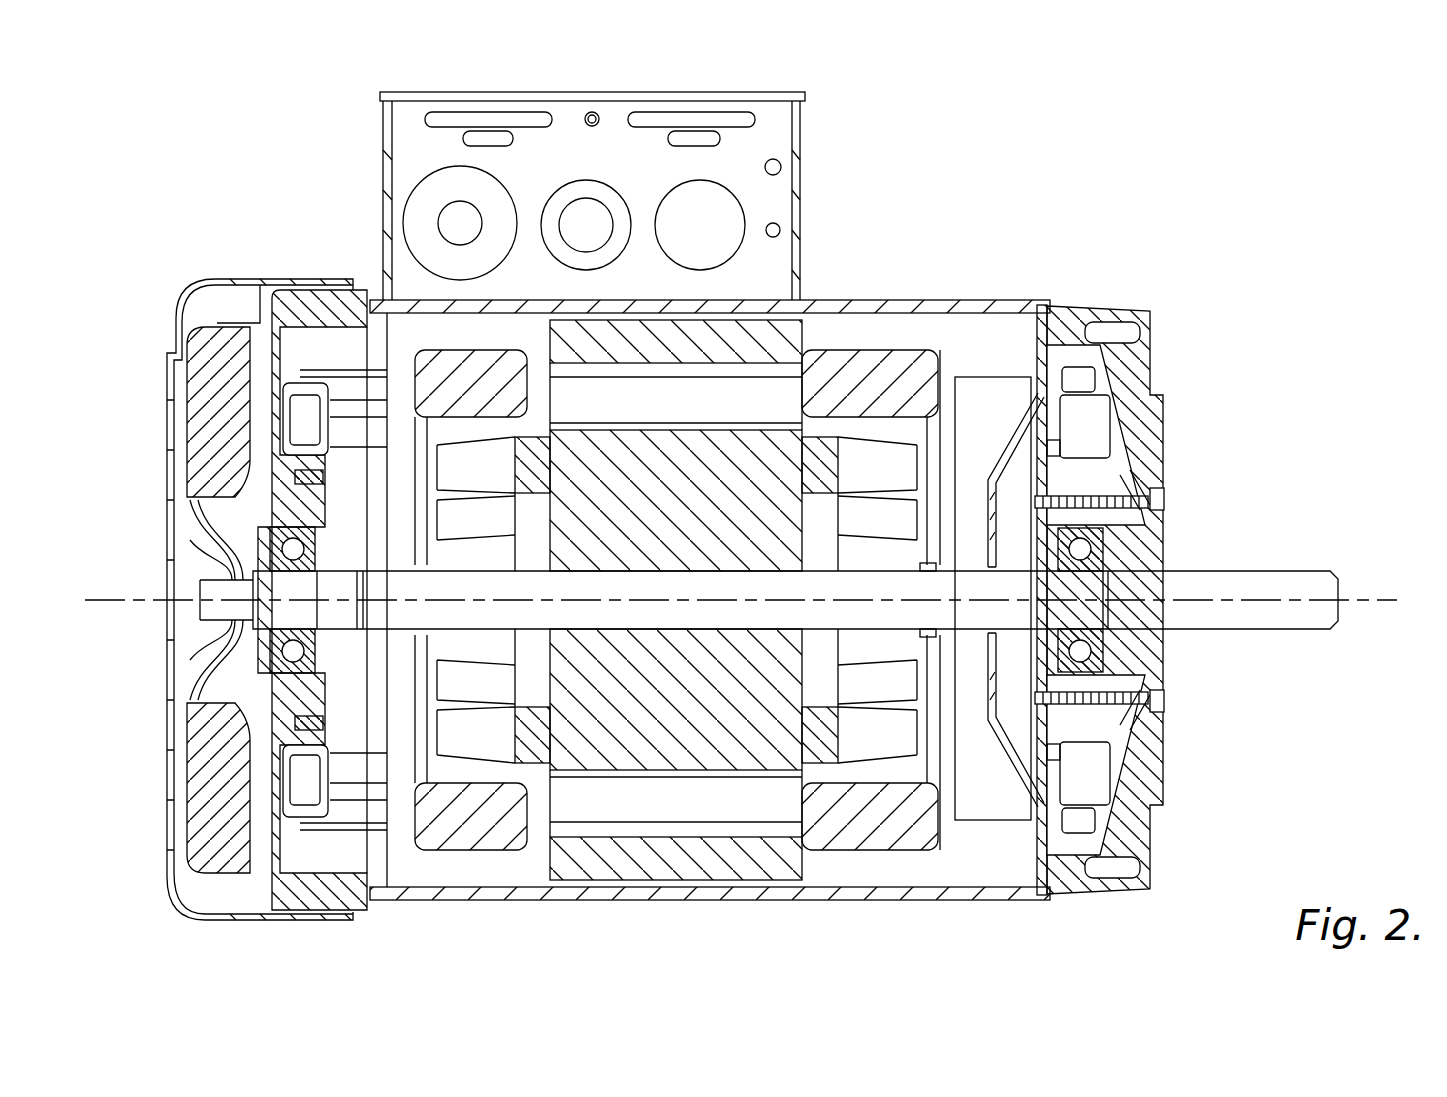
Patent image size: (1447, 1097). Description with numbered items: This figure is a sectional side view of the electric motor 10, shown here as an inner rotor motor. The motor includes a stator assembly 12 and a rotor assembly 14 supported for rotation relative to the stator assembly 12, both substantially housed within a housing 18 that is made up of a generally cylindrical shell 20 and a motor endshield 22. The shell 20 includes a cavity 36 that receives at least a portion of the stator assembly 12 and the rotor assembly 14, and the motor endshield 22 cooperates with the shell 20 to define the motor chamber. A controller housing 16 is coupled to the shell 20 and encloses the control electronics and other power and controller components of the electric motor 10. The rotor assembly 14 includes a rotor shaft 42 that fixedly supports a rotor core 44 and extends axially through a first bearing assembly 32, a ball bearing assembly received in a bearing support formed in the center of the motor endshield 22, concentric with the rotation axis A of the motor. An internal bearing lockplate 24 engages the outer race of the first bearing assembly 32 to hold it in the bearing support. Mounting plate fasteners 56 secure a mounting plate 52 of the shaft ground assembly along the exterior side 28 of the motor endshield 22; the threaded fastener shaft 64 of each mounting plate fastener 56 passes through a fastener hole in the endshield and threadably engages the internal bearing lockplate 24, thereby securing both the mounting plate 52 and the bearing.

The electric motor 10 is at (997, 152).
The stator assembly 12 is at (860, 356).
The rotor assembly 14 is at (660, 748).
The controller housing 16 is at (668, 92).
The housing 18 is at (1003, 897).
The shell 20 is at (1013, 310).
The motor endshield 22 is at (1137, 315).
The internal bearing lockplate 24 is at (1050, 482).
The exterior side 28 is at (1152, 358).
The first bearing assembly 32 is at (1112, 534).
The cavity 36 is at (955, 350).
The rotor shaft 42 is at (1297, 571).
The rotor core 44 is at (802, 745).
The mounting plate 52 is at (1138, 475).
The mounting plate fasteners 56 is at (1168, 497).
The threaded fastener shaft 64 is at (1045, 497).
The rotation axis A is at (1373, 600).